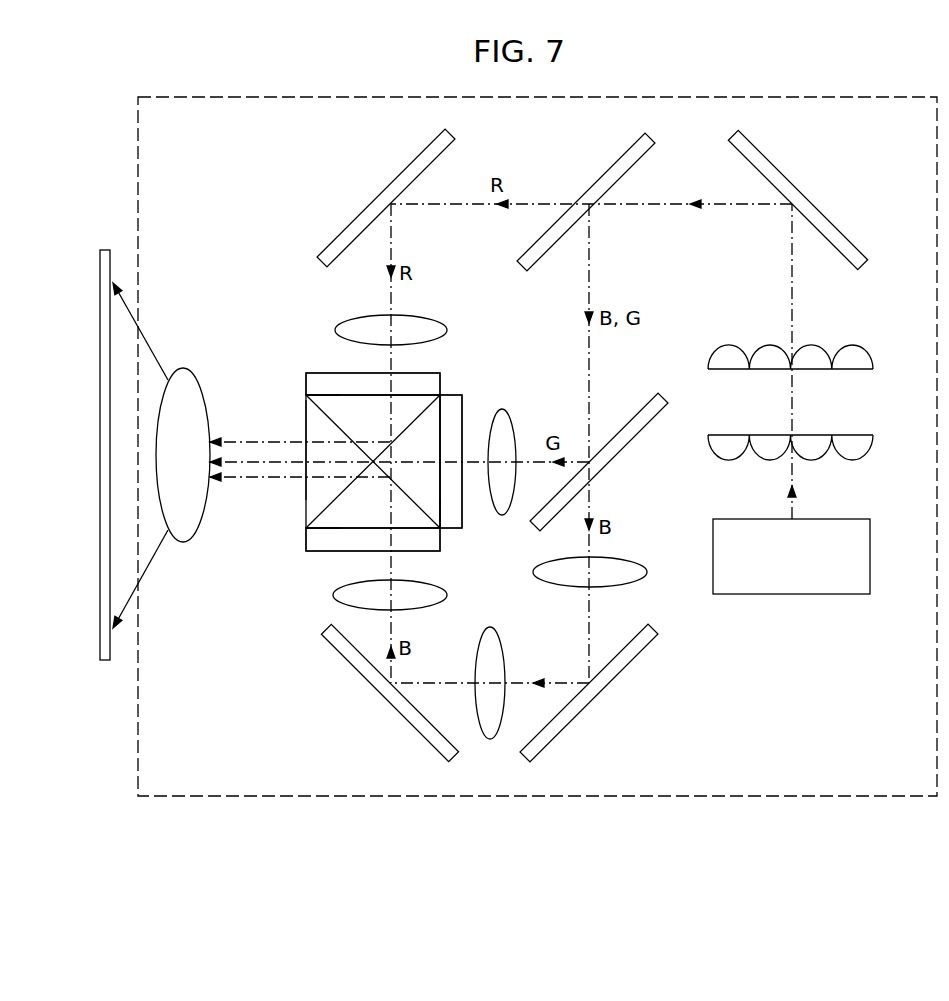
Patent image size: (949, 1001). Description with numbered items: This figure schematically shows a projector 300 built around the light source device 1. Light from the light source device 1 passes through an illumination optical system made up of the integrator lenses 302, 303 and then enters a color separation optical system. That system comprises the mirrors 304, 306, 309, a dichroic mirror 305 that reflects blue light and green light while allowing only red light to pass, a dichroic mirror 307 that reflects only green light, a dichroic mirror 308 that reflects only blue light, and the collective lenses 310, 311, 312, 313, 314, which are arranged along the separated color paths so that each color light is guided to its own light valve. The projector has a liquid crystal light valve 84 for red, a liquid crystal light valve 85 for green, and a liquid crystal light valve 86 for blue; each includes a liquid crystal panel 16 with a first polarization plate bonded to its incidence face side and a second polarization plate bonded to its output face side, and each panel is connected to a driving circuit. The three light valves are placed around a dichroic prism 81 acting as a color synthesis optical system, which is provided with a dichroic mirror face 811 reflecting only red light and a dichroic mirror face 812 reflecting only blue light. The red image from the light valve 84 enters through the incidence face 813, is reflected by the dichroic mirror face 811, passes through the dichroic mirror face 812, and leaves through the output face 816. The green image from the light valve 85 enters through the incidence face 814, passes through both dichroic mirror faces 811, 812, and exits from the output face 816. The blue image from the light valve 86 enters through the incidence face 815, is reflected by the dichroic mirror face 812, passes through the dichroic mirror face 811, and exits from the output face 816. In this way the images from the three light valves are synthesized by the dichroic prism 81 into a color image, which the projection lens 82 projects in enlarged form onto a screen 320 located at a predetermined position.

The projector 300 is at (850, 90).
The light source device 1 is at (840, 519).
The integrator lens 302 is at (850, 436).
The integrator lens 303 is at (850, 348).
The mirror 304 is at (778, 172).
The dichroic mirror 305 is at (605, 170).
The mirror 306 is at (405, 172).
The dichroic mirror 307 is at (625, 442).
The dichroic mirror 308 is at (623, 668).
The mirror 309 is at (392, 702).
The collective lens 310 is at (375, 322).
The collective lens 311 is at (498, 412).
The collective lens 312 is at (630, 578).
The collective lens 313 is at (490, 738).
The collective lens 314 is at (343, 598).
The dichroic prism 81 is at (306, 503).
The dichroic mirror face 811 is at (306, 481).
The dichroic mirror face 812 is at (322, 431).
The incidence face 813 is at (335, 398).
The incidence face 814 is at (452, 515).
The incidence face 815 is at (330, 528).
The output face 816 is at (306, 410).
The projection lens 82 is at (178, 370).
The liquid crystal light valve 84 is at (335, 378).
The liquid crystal light valve 85 is at (452, 400).
The liquid crystal light valve 86 is at (440, 545).
The liquid crystal panel 16 is at (330, 377).
The screen 320 is at (98, 601).